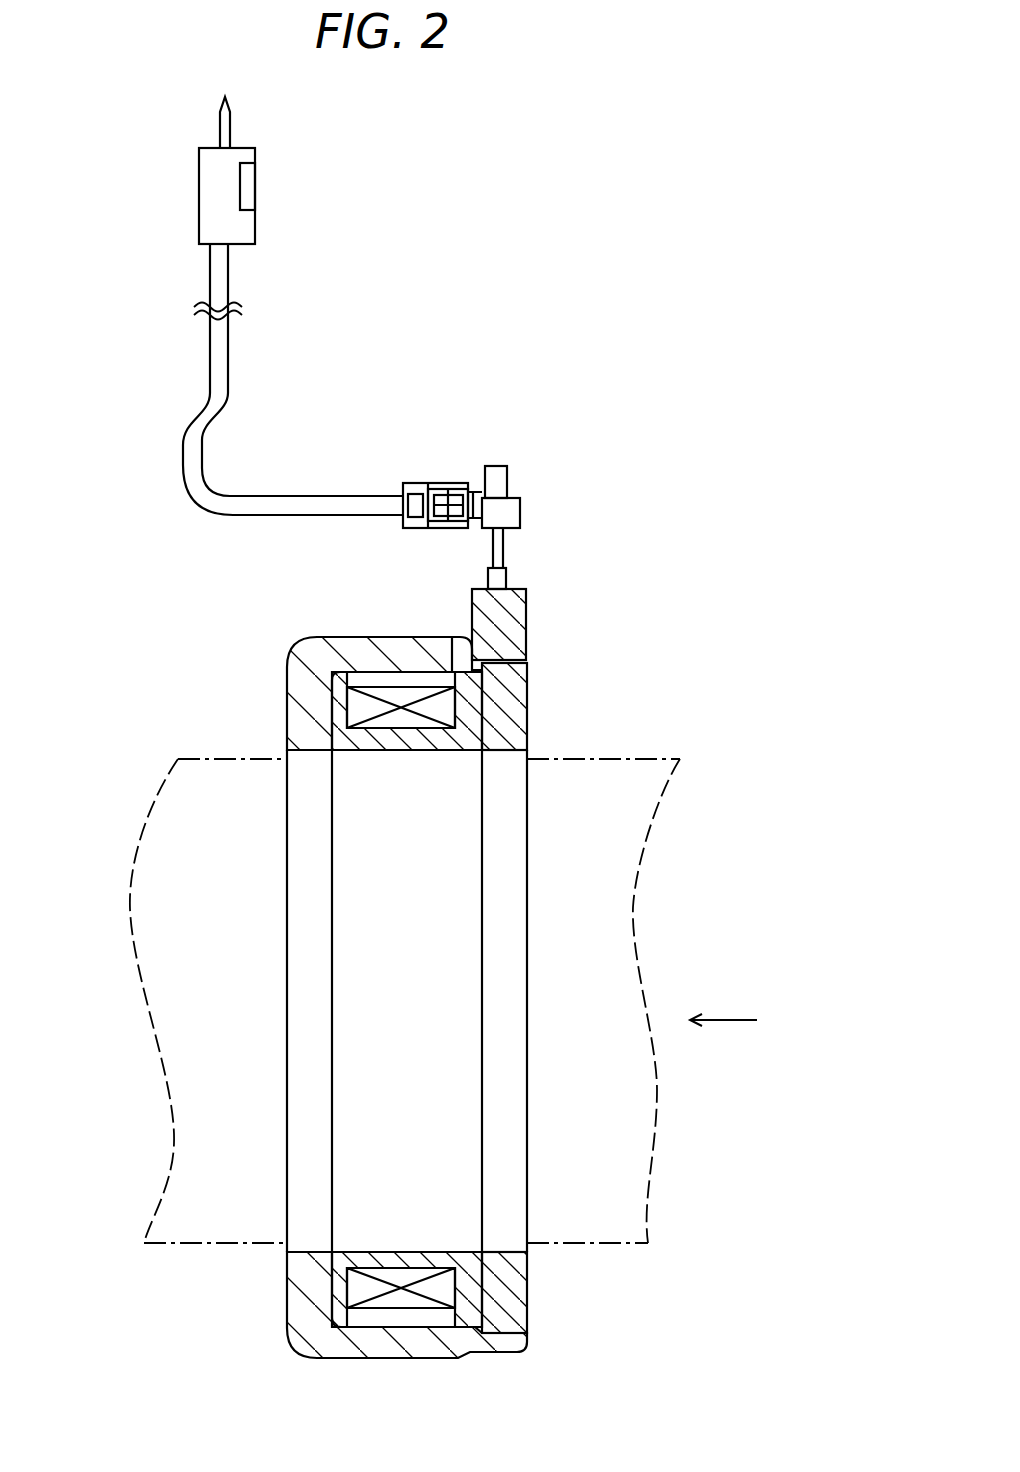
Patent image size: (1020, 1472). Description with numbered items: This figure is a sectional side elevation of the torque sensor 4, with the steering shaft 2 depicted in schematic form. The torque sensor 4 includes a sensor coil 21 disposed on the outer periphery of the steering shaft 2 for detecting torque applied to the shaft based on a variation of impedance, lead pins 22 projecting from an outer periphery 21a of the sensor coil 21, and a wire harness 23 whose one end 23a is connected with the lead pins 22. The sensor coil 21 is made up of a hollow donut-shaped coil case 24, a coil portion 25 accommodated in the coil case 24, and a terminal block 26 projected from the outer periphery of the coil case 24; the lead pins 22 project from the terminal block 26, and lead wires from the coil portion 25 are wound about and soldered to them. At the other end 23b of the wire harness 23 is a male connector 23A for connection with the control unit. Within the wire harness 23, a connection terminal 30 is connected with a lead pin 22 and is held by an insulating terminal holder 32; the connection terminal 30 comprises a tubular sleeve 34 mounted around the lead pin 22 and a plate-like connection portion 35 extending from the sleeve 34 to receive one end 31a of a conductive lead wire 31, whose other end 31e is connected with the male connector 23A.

The steering shaft 2 is at (643, 759).
The torque sensor 4 is at (489, 320).
The sensor coil 21 is at (286, 690).
The outer periphery of the sensor coil 21a is at (428, 637).
The lead pin 22 is at (503, 544).
The wire harness 23 is at (357, 465).
The male connector 23A is at (208, 190).
The one end of the wire harness 23a is at (441, 529).
The other end of the wire harness 23b is at (256, 172).
The coil case 24 is at (308, 727).
The coil portion 25 is at (440, 707).
The terminal block 26 is at (508, 624).
The connection terminal 30 is at (500, 460).
The conductive lead wire 31 is at (264, 500).
The one end of the lead wire 31a is at (457, 490).
The other end of the lead wire 31e is at (222, 250).
The terminal holder 32 is at (535, 505).
The sleeve 34 is at (503, 480).
The connection portion 35 is at (473, 492).